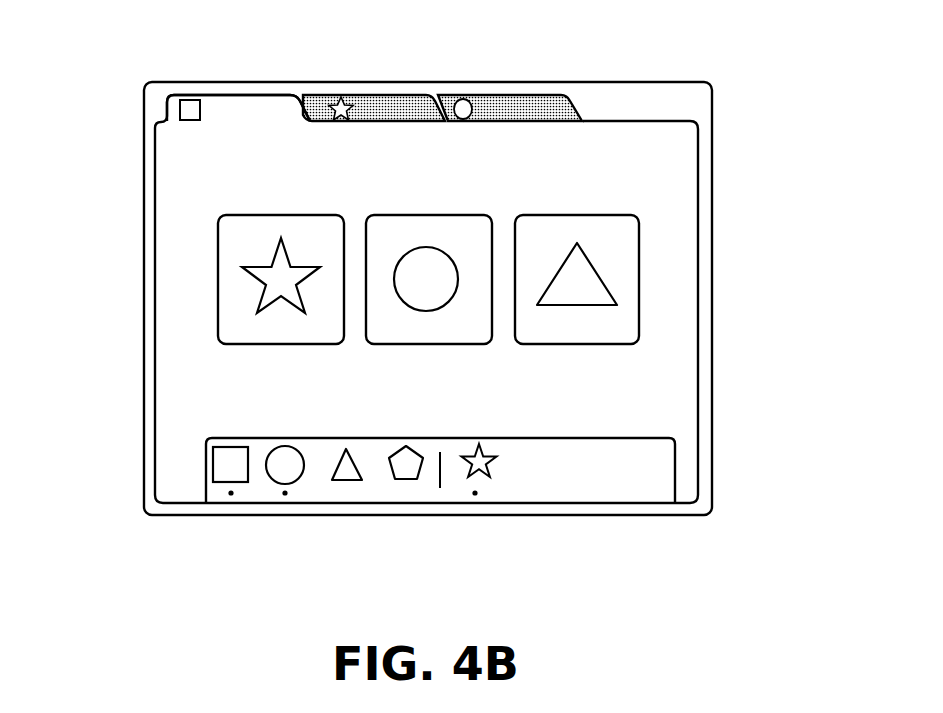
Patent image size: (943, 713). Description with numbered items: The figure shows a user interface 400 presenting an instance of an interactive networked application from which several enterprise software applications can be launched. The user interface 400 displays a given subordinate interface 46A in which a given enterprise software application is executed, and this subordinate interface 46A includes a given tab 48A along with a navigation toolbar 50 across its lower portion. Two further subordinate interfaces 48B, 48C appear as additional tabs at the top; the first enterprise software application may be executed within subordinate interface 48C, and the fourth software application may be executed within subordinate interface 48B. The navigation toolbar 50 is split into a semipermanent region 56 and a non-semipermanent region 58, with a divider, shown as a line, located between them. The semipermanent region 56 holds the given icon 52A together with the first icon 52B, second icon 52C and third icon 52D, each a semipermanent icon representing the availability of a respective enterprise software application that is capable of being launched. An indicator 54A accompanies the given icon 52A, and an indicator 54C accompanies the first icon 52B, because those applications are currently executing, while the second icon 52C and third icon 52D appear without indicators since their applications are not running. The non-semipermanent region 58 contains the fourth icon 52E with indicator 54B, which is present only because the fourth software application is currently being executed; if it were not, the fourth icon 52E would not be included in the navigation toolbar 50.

The user interface 400 is at (746, 116).
The subordinate interface 46A is at (173, 215).
The tab 48A is at (212, 95).
The subordinate interface 48B is at (397, 95).
The subordinate interface 48C is at (499, 95).
The navigation toolbar 50 is at (675, 460).
The icon 52A is at (281, 345).
The first icon 52B is at (427, 345).
The second icon 52C is at (575, 344).
The third icon 52D is at (383, 473).
The fourth icon 52E is at (466, 464).
The indicator 54A is at (231, 495).
The indicator 54B is at (478, 497).
The indicator 54C is at (286, 496).
The semipermanent region 56 is at (328, 438).
The non-semipermanent region 58 is at (555, 438).